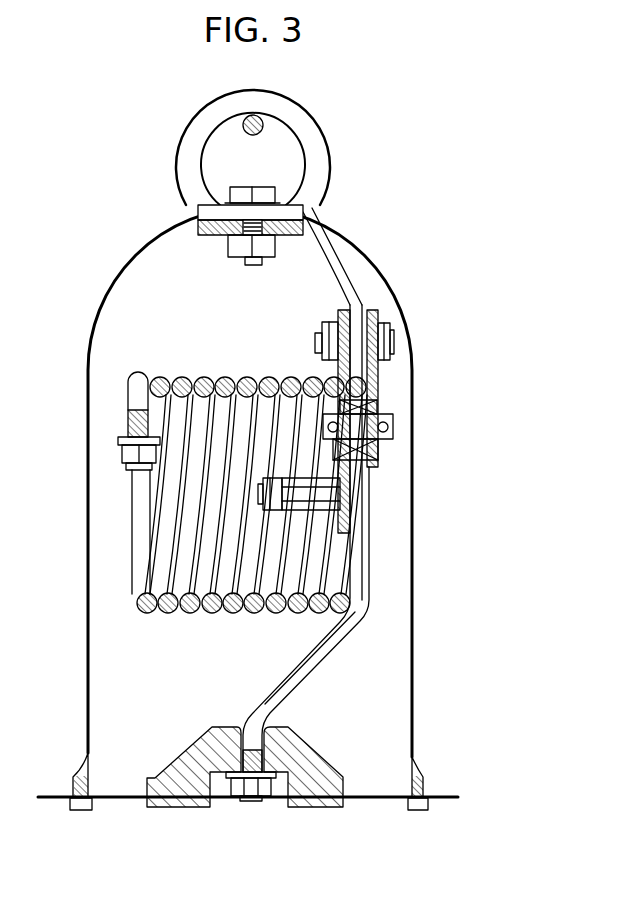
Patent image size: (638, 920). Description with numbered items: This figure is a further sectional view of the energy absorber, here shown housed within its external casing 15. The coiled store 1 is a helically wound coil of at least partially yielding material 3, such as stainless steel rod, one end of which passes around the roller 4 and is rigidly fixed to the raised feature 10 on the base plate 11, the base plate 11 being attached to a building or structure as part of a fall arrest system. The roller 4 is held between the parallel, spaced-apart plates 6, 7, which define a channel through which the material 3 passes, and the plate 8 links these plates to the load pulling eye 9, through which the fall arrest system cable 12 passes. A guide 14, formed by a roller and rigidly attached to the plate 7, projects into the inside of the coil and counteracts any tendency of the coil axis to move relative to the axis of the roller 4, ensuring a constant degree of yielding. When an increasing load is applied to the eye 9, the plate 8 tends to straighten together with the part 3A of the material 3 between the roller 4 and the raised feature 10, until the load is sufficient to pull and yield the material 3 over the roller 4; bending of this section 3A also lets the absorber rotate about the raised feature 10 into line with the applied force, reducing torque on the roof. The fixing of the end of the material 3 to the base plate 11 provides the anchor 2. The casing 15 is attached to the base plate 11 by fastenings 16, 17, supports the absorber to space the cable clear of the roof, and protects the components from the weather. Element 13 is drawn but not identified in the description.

The coiled store 1 is at (138, 374).
The anchor 2 is at (262, 802).
The yielding material 3 is at (168, 560).
The part of helical coil material 3A is at (340, 645).
The roller 4 is at (378, 402).
The plate 6 is at (372, 318).
The plate 7 is at (338, 322).
The plate 8 is at (323, 268).
The load pulling eye 9 is at (318, 178).
The raised feature 10 is at (190, 760).
The base plate 11 is at (448, 793).
The fall arrest system cable 12 is at (253, 136).
The terminal nut 13 is at (122, 448).
The guide 14 is at (312, 496).
The casing 15 is at (88, 519).
The fastening 16 is at (85, 811).
The fastening 17 is at (416, 811).